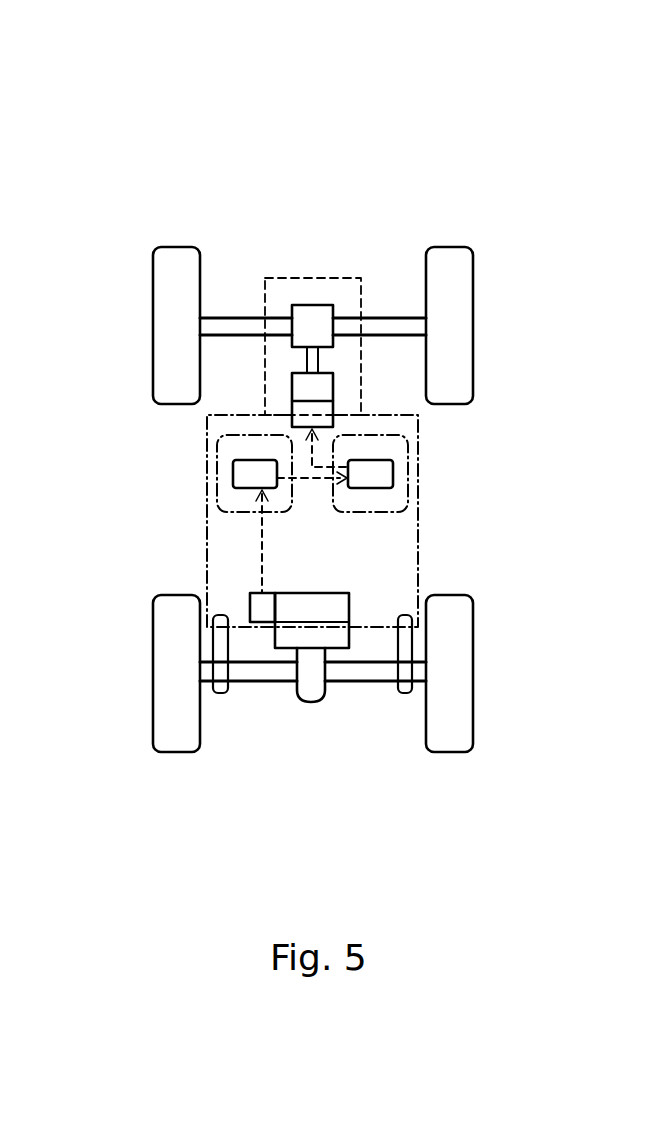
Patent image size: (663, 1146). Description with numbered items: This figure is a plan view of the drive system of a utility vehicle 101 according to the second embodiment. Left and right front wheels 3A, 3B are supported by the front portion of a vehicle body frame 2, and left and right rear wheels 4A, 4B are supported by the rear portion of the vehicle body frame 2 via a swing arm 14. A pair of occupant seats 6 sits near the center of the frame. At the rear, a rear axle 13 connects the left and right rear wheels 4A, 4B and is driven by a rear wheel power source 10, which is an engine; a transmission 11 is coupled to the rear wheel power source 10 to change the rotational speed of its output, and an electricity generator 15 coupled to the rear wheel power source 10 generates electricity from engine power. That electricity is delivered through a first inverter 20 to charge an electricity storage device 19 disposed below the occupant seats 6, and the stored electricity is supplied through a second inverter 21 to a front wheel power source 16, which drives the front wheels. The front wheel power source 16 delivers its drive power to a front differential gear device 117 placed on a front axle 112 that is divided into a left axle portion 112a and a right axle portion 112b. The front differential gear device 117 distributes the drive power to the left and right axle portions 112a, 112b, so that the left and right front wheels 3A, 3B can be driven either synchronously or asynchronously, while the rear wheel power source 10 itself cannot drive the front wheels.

The utility vehicle 101 is at (521, 122).
The vehicle body frame 2 is at (418, 543).
The left front wheel 3A is at (153, 283).
The right front wheel 3B is at (473, 283).
The left rear wheel 4A is at (153, 628).
The right rear wheel 4B is at (473, 628).
The occupant seats 6 is at (217, 490).
The rear wheel power source 10 is at (293, 608).
The transmission 11 is at (333, 637).
The rear axle 13 is at (375, 685).
The swing arm 14 is at (213, 648).
The electricity generator 15 is at (248, 605).
The front wheel power source 16 is at (333, 385).
The electricity storage device 19 is at (393, 470).
The first inverter 20 is at (233, 470).
The second inverter 21 is at (292, 410).
The front axle 112 is at (314, 271).
The left axle portion 112a is at (210, 313).
The right axle portion 112b is at (381, 256).
The front differential gear device 117 is at (313, 305).